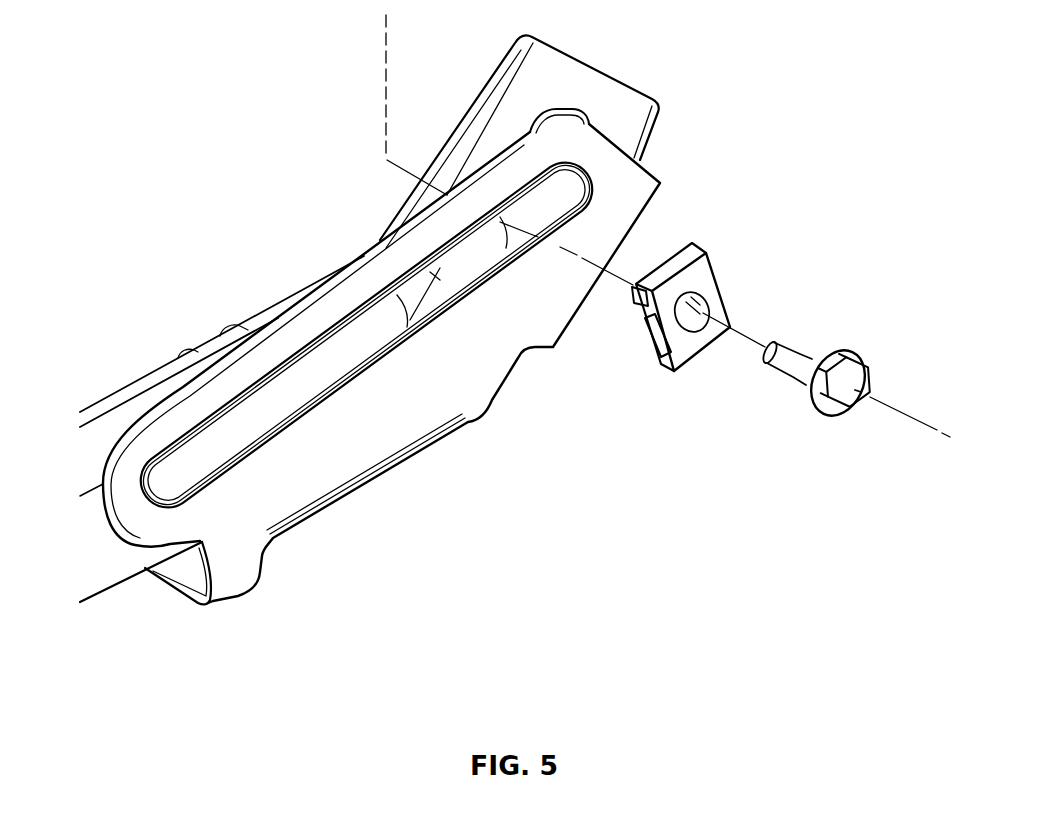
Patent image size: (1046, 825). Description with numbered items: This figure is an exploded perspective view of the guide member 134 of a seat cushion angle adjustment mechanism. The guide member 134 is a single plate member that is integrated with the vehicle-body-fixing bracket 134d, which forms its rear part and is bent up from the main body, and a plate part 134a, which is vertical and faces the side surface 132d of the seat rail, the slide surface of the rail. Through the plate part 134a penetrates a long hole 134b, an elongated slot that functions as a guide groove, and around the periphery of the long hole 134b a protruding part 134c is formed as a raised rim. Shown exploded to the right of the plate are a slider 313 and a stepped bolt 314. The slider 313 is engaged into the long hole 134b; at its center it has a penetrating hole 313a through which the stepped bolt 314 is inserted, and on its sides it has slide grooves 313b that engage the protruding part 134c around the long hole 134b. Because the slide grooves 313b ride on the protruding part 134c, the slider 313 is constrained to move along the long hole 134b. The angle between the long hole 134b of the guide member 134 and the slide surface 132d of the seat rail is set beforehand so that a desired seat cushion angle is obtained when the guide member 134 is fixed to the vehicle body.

The side surface of the seat rail 132d is at (117, 557).
The guide member 134 is at (249, 511).
The plate part 134a is at (293, 483).
The long hole 134b is at (283, 400).
The protruding part 134c is at (350, 315).
The vehicle-body-fixing bracket 134d is at (581, 88).
The slider 313 is at (681, 316).
The penetrating hole 313a is at (692, 312).
The slide grooves 313b is at (633, 290).
The stepped bolt 314 is at (875, 378).